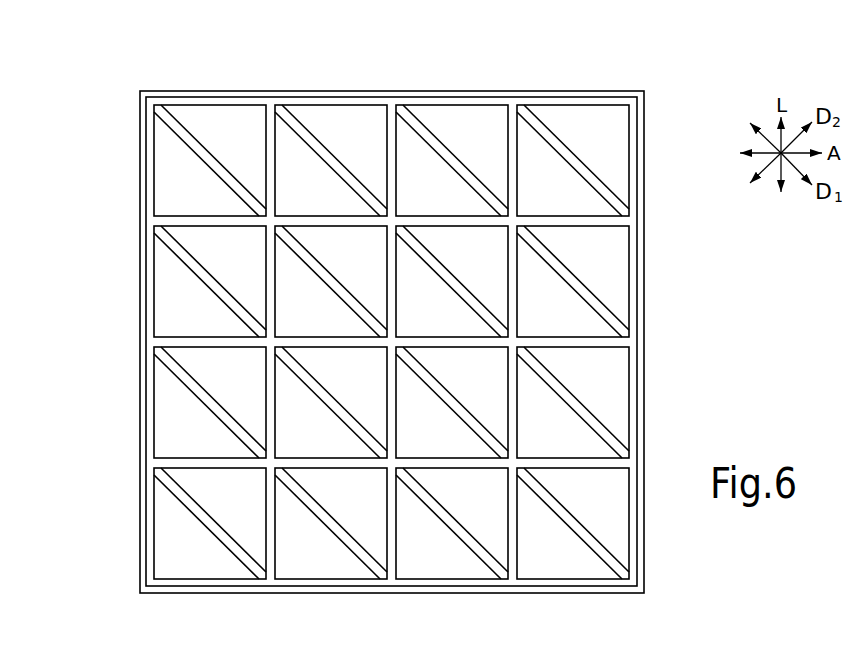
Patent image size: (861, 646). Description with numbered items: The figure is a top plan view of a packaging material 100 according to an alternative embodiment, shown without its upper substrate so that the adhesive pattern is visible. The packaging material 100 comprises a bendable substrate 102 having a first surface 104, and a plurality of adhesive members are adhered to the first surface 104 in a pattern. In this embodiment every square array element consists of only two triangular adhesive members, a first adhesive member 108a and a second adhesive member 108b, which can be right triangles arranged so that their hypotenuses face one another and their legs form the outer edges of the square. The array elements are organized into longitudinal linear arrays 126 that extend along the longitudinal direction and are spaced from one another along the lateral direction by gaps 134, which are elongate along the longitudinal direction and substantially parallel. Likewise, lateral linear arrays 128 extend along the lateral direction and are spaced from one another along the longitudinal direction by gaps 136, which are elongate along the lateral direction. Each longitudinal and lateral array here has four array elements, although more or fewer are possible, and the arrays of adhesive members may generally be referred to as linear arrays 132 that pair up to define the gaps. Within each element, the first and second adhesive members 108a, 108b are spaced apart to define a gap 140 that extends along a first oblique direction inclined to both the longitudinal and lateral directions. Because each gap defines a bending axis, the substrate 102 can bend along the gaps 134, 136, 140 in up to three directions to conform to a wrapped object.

The packaging material 100 is at (78, 85).
The bendable substrate 102 is at (632, 136).
The first surface 104 is at (635, 170).
The first adhesive member 108a is at (200, 120).
The second adhesive member 108b is at (167, 152).
The longitudinal linear array 126 is at (213, 80).
The lateral linear array 128 is at (135, 161).
The linear array 132 is at (647, 282).
The gap 134 is at (270, 97).
The gap 136 is at (148, 221).
The gap 140 is at (153, 105).